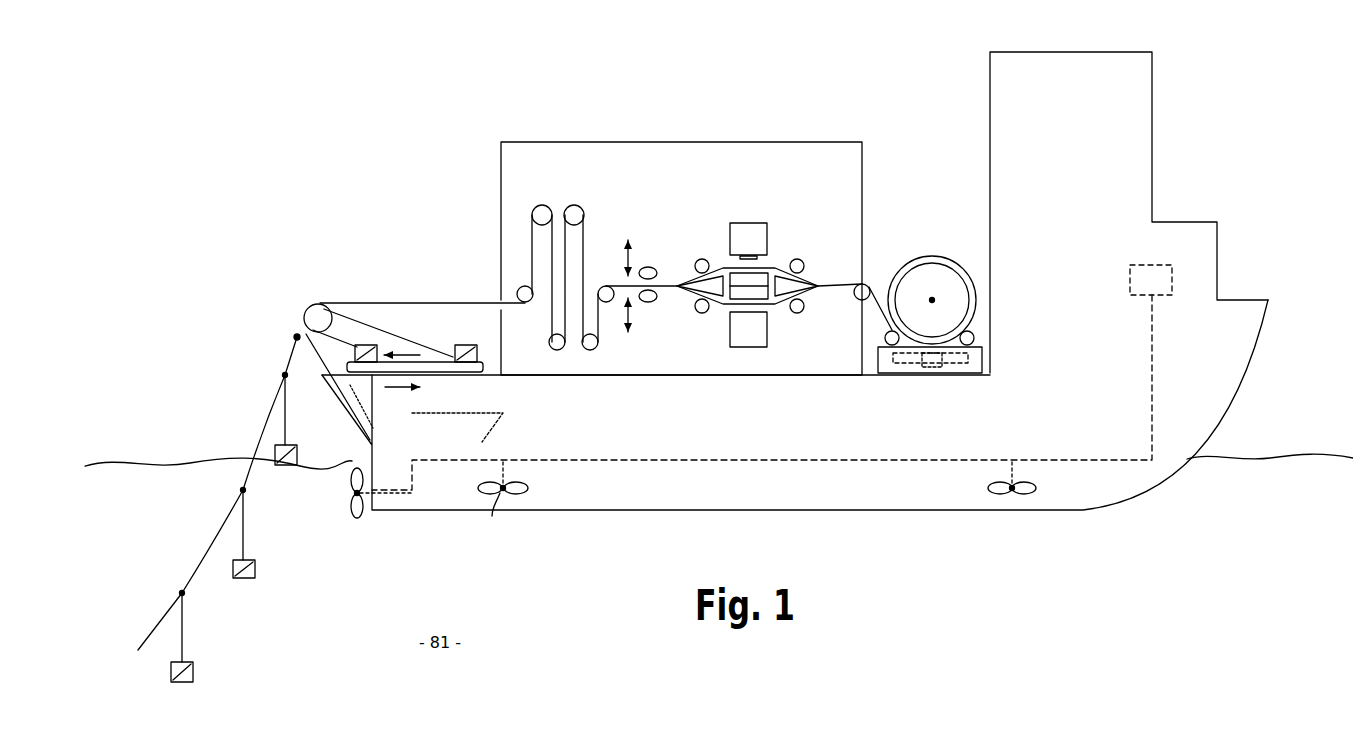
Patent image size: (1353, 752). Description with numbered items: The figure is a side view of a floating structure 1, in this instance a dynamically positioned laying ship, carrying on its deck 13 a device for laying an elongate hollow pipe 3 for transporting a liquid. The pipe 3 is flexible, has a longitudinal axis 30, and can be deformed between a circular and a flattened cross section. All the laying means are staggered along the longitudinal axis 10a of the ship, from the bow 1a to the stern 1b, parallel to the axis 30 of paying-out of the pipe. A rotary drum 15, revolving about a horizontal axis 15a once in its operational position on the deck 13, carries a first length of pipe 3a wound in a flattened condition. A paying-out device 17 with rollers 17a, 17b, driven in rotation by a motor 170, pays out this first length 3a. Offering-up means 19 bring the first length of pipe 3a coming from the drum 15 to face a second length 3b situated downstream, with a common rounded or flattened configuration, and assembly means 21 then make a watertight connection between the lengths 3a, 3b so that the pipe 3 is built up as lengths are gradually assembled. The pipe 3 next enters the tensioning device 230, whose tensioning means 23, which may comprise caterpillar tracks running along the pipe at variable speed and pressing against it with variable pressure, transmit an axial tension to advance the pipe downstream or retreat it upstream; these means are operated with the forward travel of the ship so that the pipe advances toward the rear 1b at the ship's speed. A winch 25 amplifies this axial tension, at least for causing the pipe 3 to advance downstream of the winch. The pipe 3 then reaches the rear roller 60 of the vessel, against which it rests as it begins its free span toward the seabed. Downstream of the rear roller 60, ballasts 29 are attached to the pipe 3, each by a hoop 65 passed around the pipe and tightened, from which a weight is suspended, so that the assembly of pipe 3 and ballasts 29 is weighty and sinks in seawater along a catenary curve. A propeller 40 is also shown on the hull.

The floating structure 1 is at (770, 528).
The bow 1a is at (1130, 212).
The stern 1b is at (551, 249).
The elongate hollow pipe 3 is at (205, 562).
The first length of pipe 3a is at (877, 318).
The second length of pipe 3b is at (670, 290).
The longitudinal axis of the ship 10a is at (478, 441).
The deck 13 is at (714, 363).
The rotary drum 15 is at (938, 282).
The horizontal axis 15a is at (933, 300).
The paying-out device 17 is at (963, 374).
The roller 17a is at (888, 340).
The roller 17b is at (972, 340).
The offering-up means 19 is at (790, 240).
The assembly means 21 is at (757, 223).
The tensioning means 23 is at (658, 268).
The winch 25 is at (571, 185).
The ballast 29 is at (362, 344).
The longitudinal axis of the pipe 30 is at (776, 292).
The bow thruster 40 is at (357, 520).
The rear roller 60 is at (313, 316).
The hoop 65 is at (297, 337).
The motor 170 is at (931, 374).
The tensioning device 230 is at (655, 252).